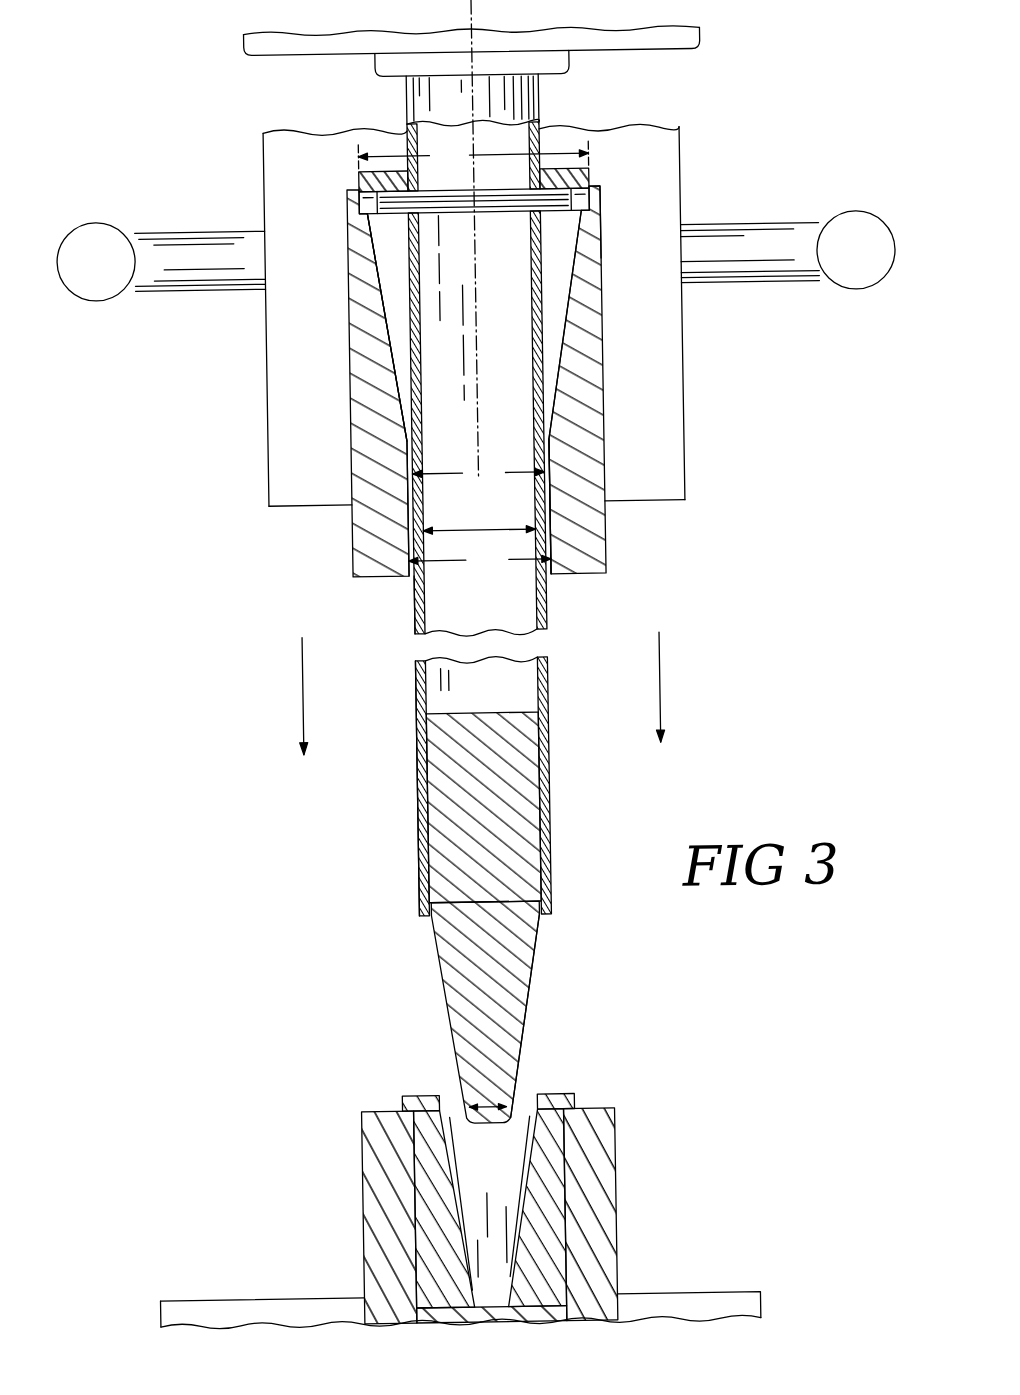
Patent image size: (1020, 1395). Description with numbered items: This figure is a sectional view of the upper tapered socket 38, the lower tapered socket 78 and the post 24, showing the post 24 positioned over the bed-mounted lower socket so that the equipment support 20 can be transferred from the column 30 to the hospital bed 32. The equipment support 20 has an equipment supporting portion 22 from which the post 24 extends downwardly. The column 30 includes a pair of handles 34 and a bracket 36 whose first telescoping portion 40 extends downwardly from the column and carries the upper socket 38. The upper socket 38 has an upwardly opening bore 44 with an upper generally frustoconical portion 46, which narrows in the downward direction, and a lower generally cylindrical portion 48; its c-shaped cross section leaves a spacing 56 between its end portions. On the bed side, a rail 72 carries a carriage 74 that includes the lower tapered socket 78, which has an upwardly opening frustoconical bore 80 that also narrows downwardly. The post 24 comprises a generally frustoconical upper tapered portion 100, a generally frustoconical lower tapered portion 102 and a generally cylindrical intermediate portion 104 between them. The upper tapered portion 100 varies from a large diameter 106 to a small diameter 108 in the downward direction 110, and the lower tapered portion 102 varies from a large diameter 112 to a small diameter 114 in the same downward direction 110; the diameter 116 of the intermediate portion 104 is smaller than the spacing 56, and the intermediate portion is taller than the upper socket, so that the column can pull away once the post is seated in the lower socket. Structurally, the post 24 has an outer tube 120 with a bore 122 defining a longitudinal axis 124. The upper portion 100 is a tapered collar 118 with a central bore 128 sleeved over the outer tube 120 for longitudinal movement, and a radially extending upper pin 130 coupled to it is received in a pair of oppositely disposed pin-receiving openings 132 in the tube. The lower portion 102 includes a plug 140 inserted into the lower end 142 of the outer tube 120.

The equipment support 20 is at (702, 52).
The equipment supporting portion 22 is at (613, 44).
The post 24 is at (609, 602).
The column 30 is at (188, 293).
The hospital bed 32 is at (266, 1294).
The handles 34 is at (103, 240).
The bracket 36 is at (262, 165).
The upper tapered socket 38 is at (605, 367).
The first telescoping portion 40 is at (287, 430).
The bore 44 is at (562, 330).
The upper generally frustoconical portion 46 is at (568, 240).
The lower generally cylindrical portion 48 is at (526, 500).
The spacing 56 is at (480, 561).
The rail 72 is at (683, 1299).
The carriage 74 is at (346, 1209).
The lower tapered socket 78 is at (562, 1158).
The frustoconical bore 80 is at (432, 1187).
The upper tapered portion 100 is at (366, 297).
The lower tapered portion 102 is at (534, 983).
The generally cylindrical intermediate portion 104 is at (530, 683).
The large diameter 106 is at (473, 156).
The small diameter 108 is at (478, 474).
The downward direction 110 is at (292, 690).
The large diameter 112 is at (468, 902).
The small diameter 114 is at (476, 1100).
The diameter 116 is at (506, 528).
The tapered collar 118 is at (553, 272).
The outer tube 120 is at (406, 707).
The bore 122 is at (430, 600).
The longitudinal axis 124 is at (476, 25).
The central bore 128 is at (408, 350).
The upper pin 130 is at (494, 206).
The pin-receiving openings 132 is at (535, 206).
The plug 140 is at (450, 967).
The lower end 142 is at (412, 880).